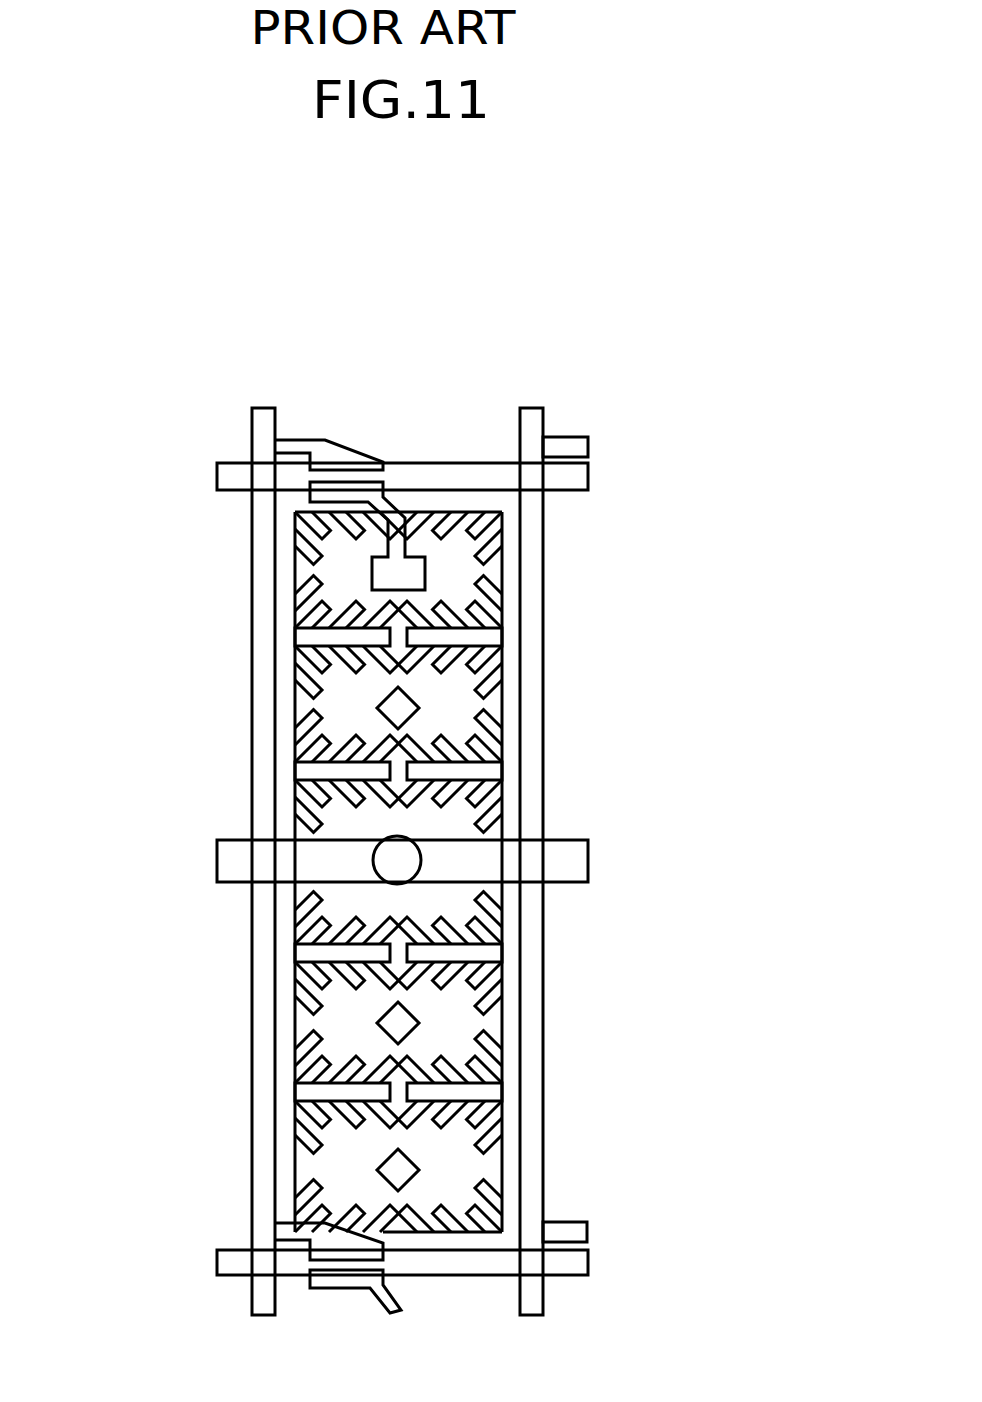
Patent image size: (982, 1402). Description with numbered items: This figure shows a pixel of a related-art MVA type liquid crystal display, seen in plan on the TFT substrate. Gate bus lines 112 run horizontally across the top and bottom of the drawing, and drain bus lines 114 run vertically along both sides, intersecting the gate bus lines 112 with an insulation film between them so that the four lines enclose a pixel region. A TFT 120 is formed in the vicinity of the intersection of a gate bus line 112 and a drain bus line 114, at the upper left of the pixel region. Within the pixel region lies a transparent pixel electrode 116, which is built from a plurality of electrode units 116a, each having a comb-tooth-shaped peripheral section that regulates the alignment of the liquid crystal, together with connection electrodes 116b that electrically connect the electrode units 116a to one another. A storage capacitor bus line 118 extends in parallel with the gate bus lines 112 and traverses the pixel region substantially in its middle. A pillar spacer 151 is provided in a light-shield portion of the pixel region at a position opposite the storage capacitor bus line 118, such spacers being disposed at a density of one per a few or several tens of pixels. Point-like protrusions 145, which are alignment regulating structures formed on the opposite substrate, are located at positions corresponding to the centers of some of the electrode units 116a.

The gate bus line 112 is at (218, 477).
The drain bus line 114 is at (262, 406).
The pixel electrode 116 is at (539, 872).
The electrode unit 116a is at (520, 558).
The connection electrode 116b is at (405, 636).
The storage capacitor bus line 118 is at (218, 862).
The TFT 120 is at (376, 421).
The point-like protrusion 145 is at (405, 707).
The pillar spacer 151 is at (410, 862).